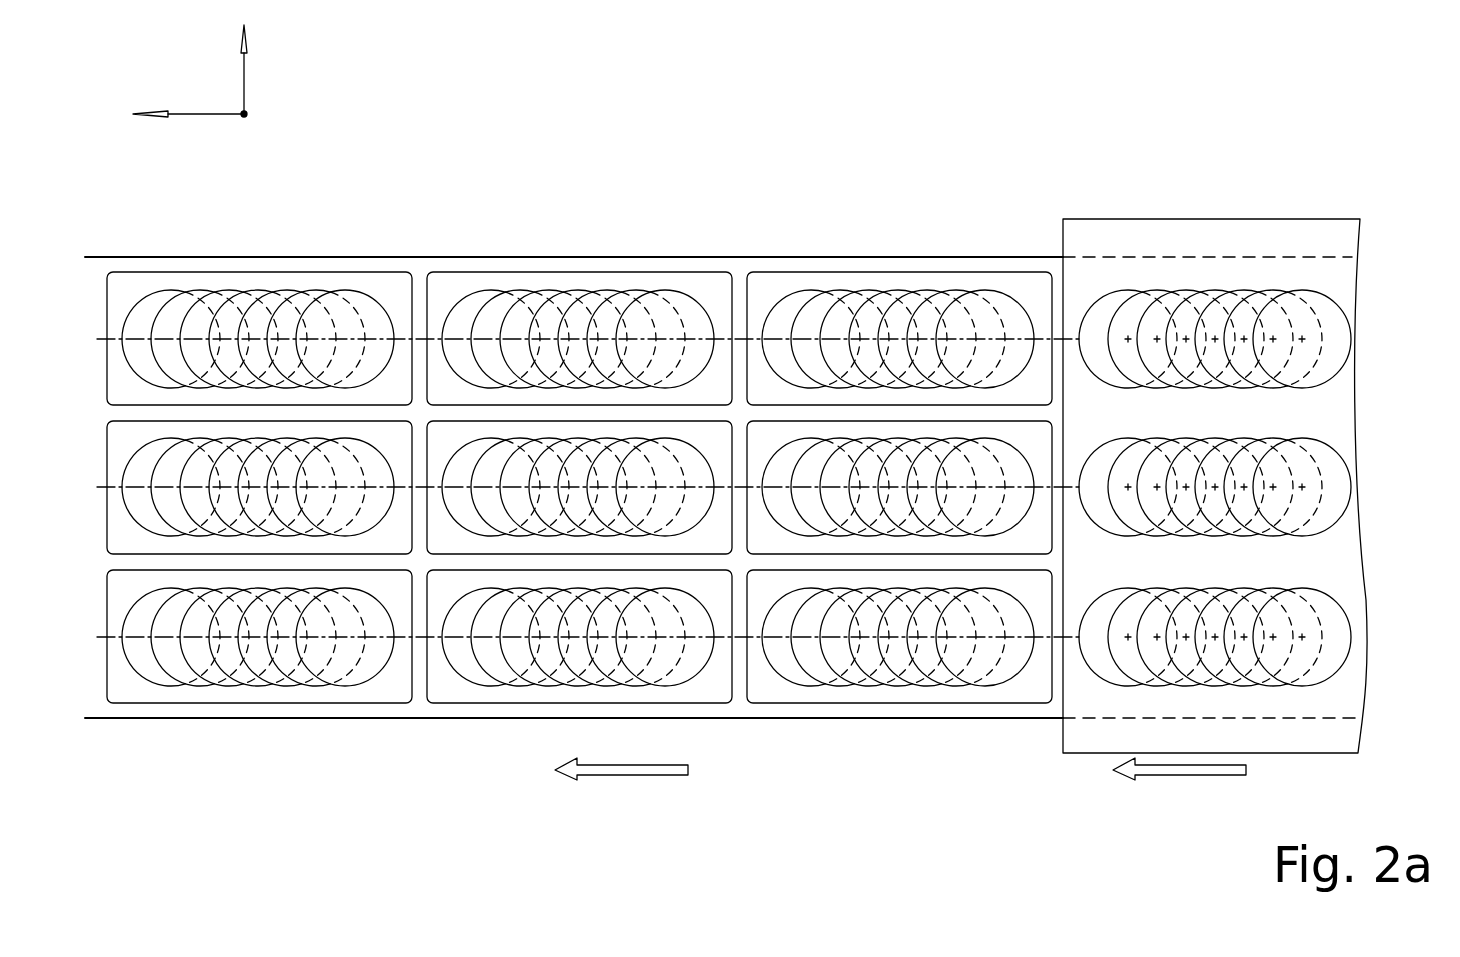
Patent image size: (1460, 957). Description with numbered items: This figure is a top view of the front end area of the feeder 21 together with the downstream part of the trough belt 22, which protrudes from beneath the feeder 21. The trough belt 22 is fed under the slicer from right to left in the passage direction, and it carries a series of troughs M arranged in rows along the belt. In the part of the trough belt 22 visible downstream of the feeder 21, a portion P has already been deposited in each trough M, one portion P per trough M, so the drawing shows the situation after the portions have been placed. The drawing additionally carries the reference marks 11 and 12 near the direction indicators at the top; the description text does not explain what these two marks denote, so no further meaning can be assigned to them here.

The cross direction axis 11 is at (245, 70).
The origin point 12 is at (244, 114).
The trough belt 22 is at (528, 257).
The trough M is at (777, 272).
The portion P is at (903, 277).
The feeder 21 is at (1178, 219).